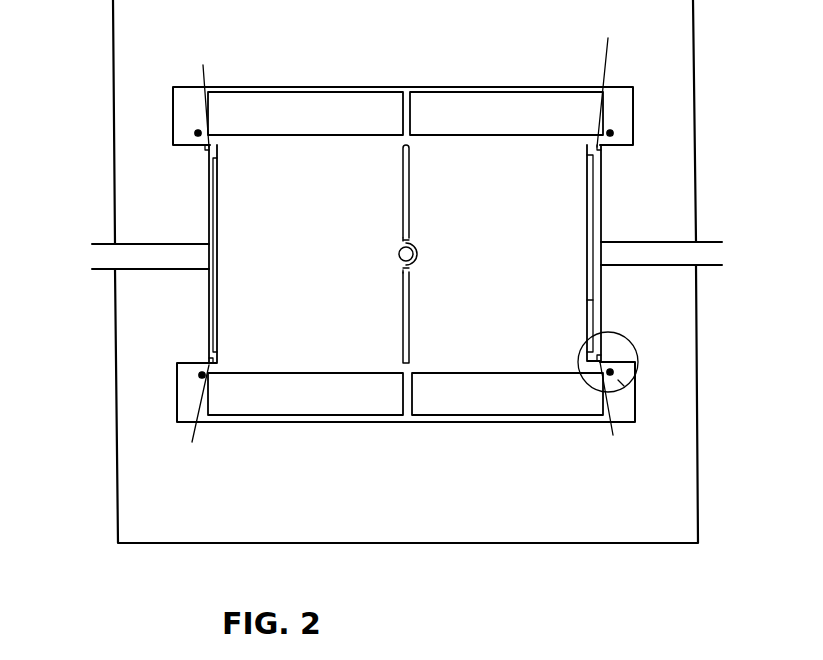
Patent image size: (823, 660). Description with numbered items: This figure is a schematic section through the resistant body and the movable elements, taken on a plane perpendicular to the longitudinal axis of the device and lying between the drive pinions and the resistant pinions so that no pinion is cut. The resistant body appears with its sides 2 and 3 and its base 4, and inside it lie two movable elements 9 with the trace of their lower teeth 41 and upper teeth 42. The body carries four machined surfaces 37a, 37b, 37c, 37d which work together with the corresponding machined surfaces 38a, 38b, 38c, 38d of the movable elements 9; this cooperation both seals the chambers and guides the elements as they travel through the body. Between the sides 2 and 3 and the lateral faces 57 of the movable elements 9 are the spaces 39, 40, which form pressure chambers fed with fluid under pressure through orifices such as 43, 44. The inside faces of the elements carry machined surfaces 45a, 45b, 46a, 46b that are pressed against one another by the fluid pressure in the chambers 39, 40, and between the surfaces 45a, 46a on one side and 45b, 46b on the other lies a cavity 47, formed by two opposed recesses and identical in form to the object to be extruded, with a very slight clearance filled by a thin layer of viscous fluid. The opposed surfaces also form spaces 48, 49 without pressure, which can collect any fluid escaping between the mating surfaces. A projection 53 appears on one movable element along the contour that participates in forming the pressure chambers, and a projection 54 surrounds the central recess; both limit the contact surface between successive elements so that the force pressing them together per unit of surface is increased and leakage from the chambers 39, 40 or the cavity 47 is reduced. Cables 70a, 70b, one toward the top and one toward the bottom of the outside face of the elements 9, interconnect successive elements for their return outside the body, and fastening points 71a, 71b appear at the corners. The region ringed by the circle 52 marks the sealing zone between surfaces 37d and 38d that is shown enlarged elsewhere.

The side of the resistant body 2 is at (683, 347).
The side of the resistant body 3 is at (162, 150).
The base of the resistant body 4 is at (484, 492).
The movable element 9 is at (515, 293).
The machined surface of the resistant body 37a is at (205, 148).
The machined surface of the resistant body 37b is at (210, 358).
The machined surface of the resistant body 37c is at (600, 150).
The machined surface of the resistant body 37d is at (600, 357).
The machined surface of the movable element 38a is at (210, 92).
The machined surface of the movable element 38b is at (201, 420).
The machined surface of the movable element 38c is at (616, 80).
The machined surface of the movable element 38d is at (628, 412).
The pressure chamber 39 is at (595, 183).
The pressure chamber 40 is at (210, 193).
The lower teeth 41 is at (483, 438).
The upper teeth 42 is at (465, 110).
The orifice 43 is at (687, 253).
The orifice 44 is at (118, 260).
The machined surface of the inside face 45a is at (412, 240).
The machined surface of the inside face 45b is at (412, 268).
The machined surface of the inside face 46a is at (400, 242).
The machined surface of the inside face 46b is at (402, 270).
The cavity 47 is at (397, 258).
The space without pressure 48 is at (405, 185).
The space without pressure 49 is at (405, 323).
The circle 52 is at (623, 387).
The projection 53 is at (590, 307).
The projection 54 is at (415, 252).
The lateral face of the movable element 57 is at (643, 173).
The cable 70a is at (610, 133).
The cable 70b is at (610, 372).
The rivet 71a is at (198, 133).
The rivet 71b is at (202, 375).